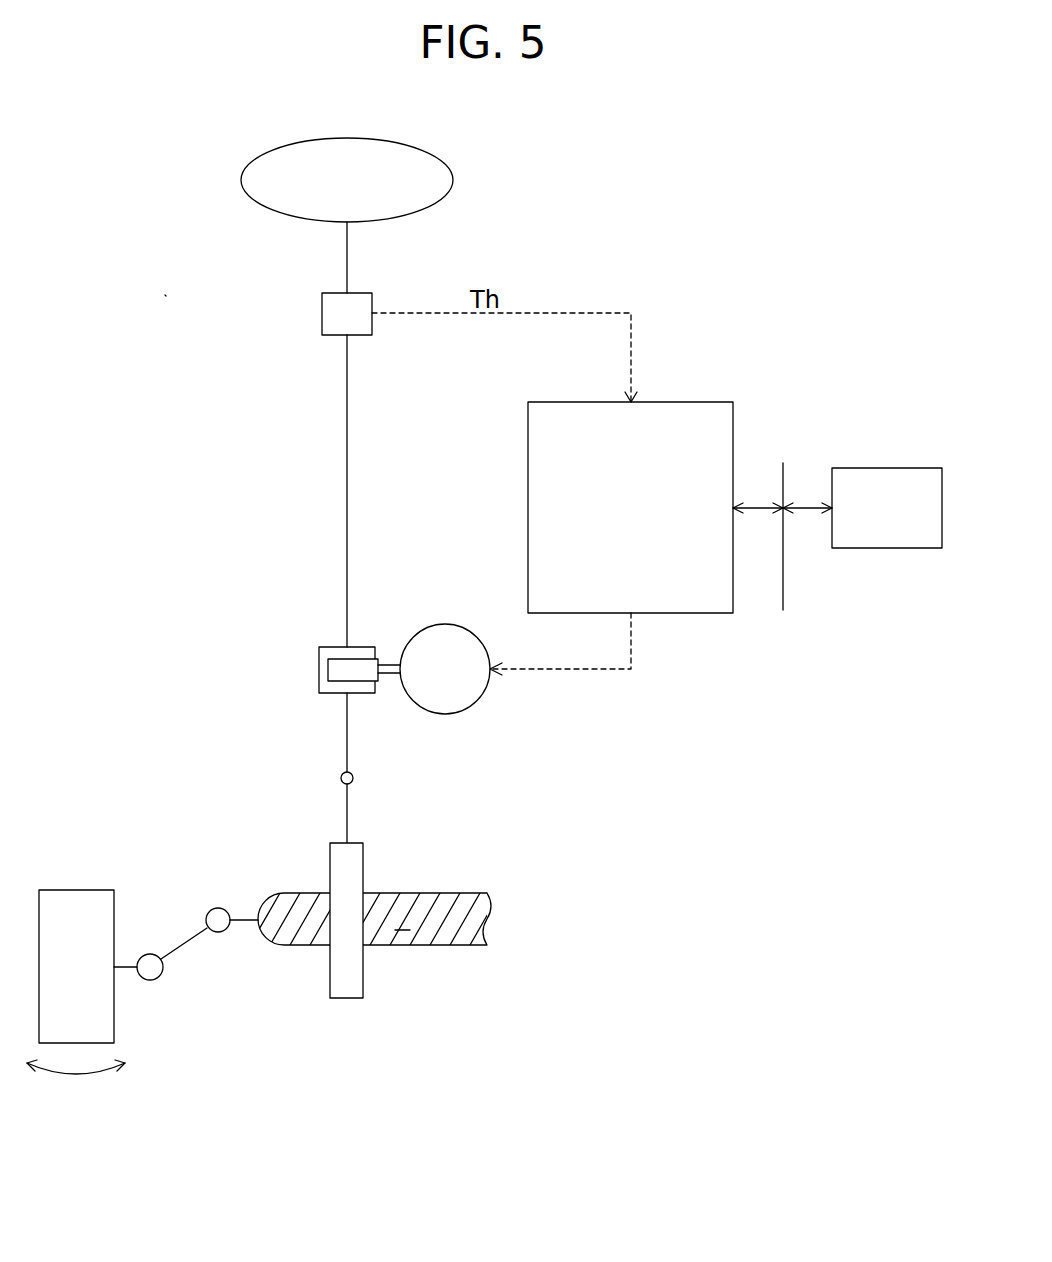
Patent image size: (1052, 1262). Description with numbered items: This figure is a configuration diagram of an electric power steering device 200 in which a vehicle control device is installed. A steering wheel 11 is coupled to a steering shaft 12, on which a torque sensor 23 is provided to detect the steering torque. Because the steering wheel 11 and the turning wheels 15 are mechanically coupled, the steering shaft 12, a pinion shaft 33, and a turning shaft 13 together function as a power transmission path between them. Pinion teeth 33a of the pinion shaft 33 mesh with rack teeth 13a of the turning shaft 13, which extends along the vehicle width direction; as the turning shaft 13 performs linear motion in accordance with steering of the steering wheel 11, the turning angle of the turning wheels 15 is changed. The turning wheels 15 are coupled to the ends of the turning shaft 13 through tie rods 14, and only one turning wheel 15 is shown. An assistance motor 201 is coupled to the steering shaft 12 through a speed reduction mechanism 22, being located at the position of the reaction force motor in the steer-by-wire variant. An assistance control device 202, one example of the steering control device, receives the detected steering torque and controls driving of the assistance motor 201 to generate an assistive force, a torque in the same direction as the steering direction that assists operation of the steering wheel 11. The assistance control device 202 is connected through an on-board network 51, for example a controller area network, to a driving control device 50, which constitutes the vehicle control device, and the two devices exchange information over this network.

The steering wheel 11 is at (241, 180).
The steering shaft 12 is at (347, 258).
The turning shaft 13 is at (445, 948).
The rack teeth 13a is at (409, 930).
The tie rod 14 is at (176, 942).
The turning wheel 15 is at (77, 890).
The speed reduction mechanism 22 is at (314, 702).
The torque sensor 23 is at (322, 312).
The pinion shaft 33 is at (349, 812).
The pinion teeth 33a is at (355, 865).
The driving control device 50 is at (875, 468).
The on-board network 51 is at (790, 478).
The electric power steering device 200 is at (188, 328).
The assistance motor 201 is at (413, 632).
The assistance control device 202 is at (692, 402).